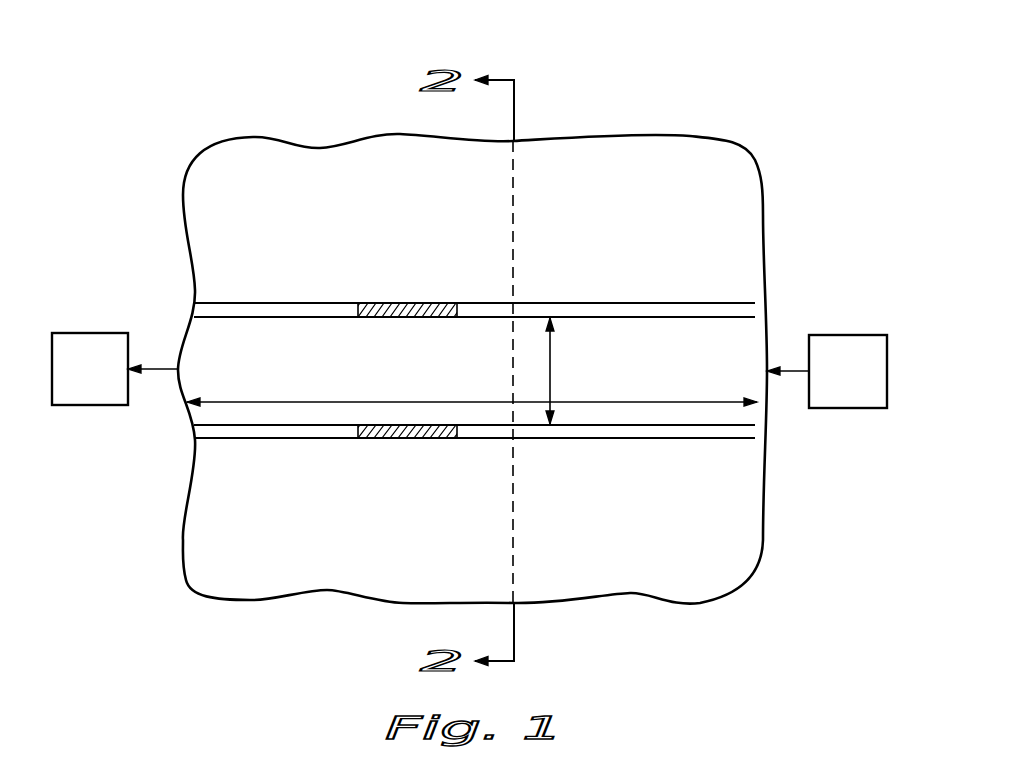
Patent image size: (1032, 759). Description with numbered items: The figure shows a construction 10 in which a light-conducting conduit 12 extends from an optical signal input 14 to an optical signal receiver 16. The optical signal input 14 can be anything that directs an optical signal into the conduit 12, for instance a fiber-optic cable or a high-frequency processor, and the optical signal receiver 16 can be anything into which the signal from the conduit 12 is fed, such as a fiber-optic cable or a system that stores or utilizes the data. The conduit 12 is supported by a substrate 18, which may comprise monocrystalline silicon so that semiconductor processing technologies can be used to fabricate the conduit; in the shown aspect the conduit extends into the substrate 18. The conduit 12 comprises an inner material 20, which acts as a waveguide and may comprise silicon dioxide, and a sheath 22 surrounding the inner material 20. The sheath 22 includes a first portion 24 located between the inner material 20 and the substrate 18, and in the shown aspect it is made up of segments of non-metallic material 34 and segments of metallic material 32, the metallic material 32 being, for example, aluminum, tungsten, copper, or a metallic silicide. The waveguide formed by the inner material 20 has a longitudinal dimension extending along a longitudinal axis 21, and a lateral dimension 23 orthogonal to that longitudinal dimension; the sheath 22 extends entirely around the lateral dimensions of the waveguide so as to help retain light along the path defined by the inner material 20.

The construction 10 is at (731, 77).
The light-conducting conduit 12 is at (715, 319).
The optical signal input 14 is at (866, 387).
The optical signal receiver 16 is at (106, 383).
The substrate 18 is at (724, 207).
The inner material 20 is at (716, 380).
The longitudinal axis 21 is at (315, 400).
The sheath 22 is at (540, 300).
The lateral dimension 23 is at (551, 360).
The first portion 24 is at (626, 307).
The metallic material 32 is at (412, 303).
The non-metallic material 34 is at (275, 310).